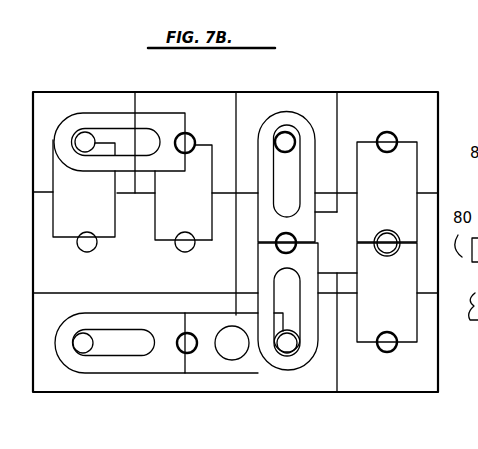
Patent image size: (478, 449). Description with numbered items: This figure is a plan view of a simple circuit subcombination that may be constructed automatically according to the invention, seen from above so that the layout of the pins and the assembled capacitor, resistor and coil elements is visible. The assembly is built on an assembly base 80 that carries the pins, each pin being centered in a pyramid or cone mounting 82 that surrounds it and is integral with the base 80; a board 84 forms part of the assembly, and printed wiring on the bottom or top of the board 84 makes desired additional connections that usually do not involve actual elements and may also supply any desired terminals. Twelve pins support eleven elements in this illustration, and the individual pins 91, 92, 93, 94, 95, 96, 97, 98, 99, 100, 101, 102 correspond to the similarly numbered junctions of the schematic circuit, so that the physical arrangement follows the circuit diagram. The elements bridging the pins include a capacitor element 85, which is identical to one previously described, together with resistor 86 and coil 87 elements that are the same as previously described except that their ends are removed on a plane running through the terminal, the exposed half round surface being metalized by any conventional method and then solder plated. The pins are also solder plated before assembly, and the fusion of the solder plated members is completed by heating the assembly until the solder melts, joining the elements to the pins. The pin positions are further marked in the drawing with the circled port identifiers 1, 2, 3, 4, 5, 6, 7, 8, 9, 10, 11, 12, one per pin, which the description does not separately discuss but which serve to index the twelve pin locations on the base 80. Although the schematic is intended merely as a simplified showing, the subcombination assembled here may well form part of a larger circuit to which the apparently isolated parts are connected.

The port 1 is at (83, 343).
The port 2 is at (87, 242).
The port 3 is at (85, 142).
The port 4 is at (187, 343).
The port 5 is at (185, 242).
The port 6 is at (185, 143).
The port 7 is at (287, 343).
The port 8 is at (286, 243).
The port 9 is at (285, 142).
The port 10 is at (388, 342).
The port 11 is at (387, 243).
The port 12 is at (388, 142).
The assembly base 80 is at (440, 369).
The pyramid or cone mountings 82 is at (399, 383).
The board 84 is at (464, 295).
The capacitor element 85 is at (307, 354).
The resistor element 86 is at (396, 188).
The coil element 87 is at (219, 368).
The pin 91 is at (74, 346).
The pin 92 is at (87, 253).
The pin 93 is at (86, 132).
The pin 94 is at (190, 333).
The pin 95 is at (193, 232).
The pin 96 is at (188, 134).
The pin 97 is at (287, 357).
The pin 98 is at (276, 246).
The pin 99 is at (290, 133).
The pin 100 is at (400, 309).
The pin 101 is at (394, 232).
The pin 102 is at (395, 134).